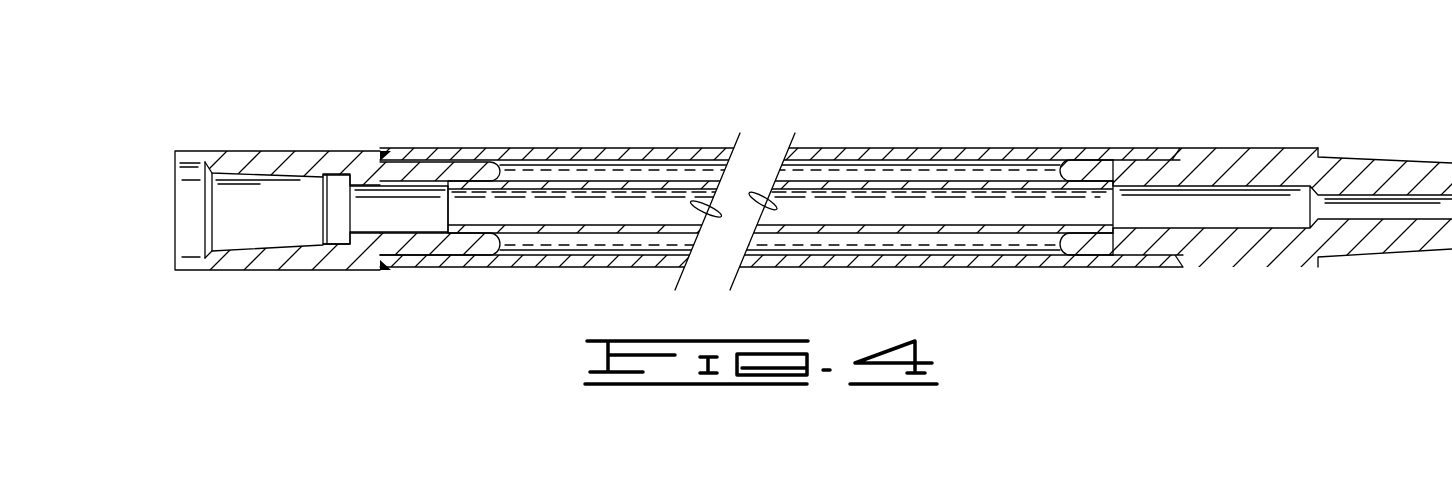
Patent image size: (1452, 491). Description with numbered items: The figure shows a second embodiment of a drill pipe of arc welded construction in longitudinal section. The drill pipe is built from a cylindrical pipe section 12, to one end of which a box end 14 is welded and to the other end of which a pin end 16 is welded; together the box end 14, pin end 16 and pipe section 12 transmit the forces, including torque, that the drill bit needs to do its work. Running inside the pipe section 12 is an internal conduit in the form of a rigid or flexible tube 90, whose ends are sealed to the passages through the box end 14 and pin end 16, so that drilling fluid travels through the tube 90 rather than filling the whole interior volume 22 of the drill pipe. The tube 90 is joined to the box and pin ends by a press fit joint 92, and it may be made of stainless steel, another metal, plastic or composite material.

The cylindrical pipe section 12 is at (823, 147).
The box end 14 is at (258, 150).
The pin end 16 is at (1262, 147).
The interior volume 22 is at (675, 173).
The rigid or flexible tube 90 is at (936, 180).
The press fit joint 92 is at (477, 177).